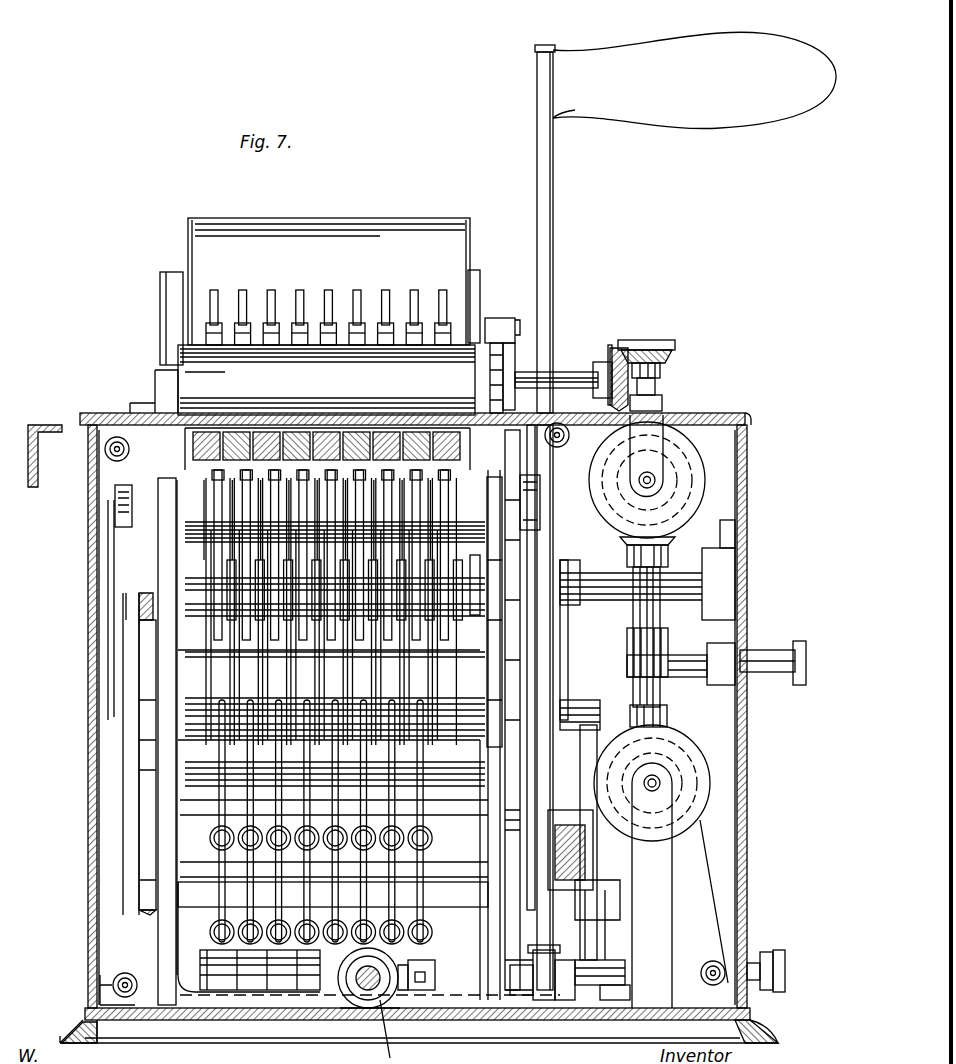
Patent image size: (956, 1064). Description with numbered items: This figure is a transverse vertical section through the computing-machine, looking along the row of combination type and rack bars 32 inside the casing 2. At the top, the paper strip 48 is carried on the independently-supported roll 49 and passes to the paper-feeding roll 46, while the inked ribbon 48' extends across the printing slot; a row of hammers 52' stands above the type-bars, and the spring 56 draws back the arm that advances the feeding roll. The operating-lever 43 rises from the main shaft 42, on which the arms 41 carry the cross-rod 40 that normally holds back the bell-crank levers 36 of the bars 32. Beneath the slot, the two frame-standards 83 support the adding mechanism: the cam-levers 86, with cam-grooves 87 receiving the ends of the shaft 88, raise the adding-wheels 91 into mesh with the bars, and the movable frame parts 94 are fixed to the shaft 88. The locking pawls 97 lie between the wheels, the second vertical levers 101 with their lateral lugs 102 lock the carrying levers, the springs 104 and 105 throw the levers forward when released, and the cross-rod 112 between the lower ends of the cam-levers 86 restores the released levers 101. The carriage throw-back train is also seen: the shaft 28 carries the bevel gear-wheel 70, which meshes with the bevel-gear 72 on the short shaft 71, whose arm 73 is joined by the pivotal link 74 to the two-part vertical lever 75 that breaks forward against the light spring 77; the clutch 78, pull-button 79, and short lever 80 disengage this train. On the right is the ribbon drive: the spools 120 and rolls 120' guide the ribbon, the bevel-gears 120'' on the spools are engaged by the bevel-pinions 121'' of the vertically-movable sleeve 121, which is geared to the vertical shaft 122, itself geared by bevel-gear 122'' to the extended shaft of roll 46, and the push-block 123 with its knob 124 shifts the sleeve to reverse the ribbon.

The casing 2 is at (107, 414).
The shaft 28 is at (355, 1010).
The combination type and rack bars 32 is at (193, 440).
The bell-crank lever 36 is at (444, 865).
The cross-rod 40 is at (586, 708).
The arms 41 is at (553, 647).
The main shaft 42 is at (596, 575).
The operating-lever 43 is at (553, 230).
The paper-feeding roll 46 is at (326, 380).
The paper strip 48 is at (334, 281).
The inked ribbon 48' is at (611, 650).
The independently-supported roll 49 is at (186, 273).
The hammers 52' is at (282, 296).
The spring 56 is at (540, 410).
The bevel gear-wheel 70 is at (608, 1000).
The short shaft 71 is at (514, 970).
The bevel-gear 72 is at (410, 1000).
The arm 73 is at (590, 940).
The pivotal link 74 is at (606, 899).
The vertical lever 75 is at (590, 760).
The light spring 77 is at (562, 836).
The clutch 78 is at (510, 1000).
The pull-button 79 is at (786, 950).
The short lever 80 is at (540, 1010).
The frame-standards 83 is at (172, 829).
The cam-levers 86 is at (126, 673).
The cam-grooves 87 is at (115, 510).
The shaft 88 is at (145, 528).
The adding-wheels 91 is at (212, 488).
The movable frame parts 94 is at (319, 741).
The locking pawls 97 is at (452, 540).
The second vertical lever 101 is at (230, 891).
The lateral lug 102 is at (463, 585).
The spring 104 is at (430, 833).
The spring 105 is at (445, 935).
The cross-rod 112 is at (480, 900).
The spools 120 is at (662, 711).
The rolls 120' is at (385, 714).
The bevel-gears 120'' is at (723, 628).
The vertically-movable sleeve 121 is at (636, 622).
The bevel-pinions 121'' is at (669, 635).
The vertical shaft 122 is at (662, 364).
The bevel-gear 122'' is at (586, 353).
The push-block 123 is at (690, 660).
The knob 124 is at (797, 652).